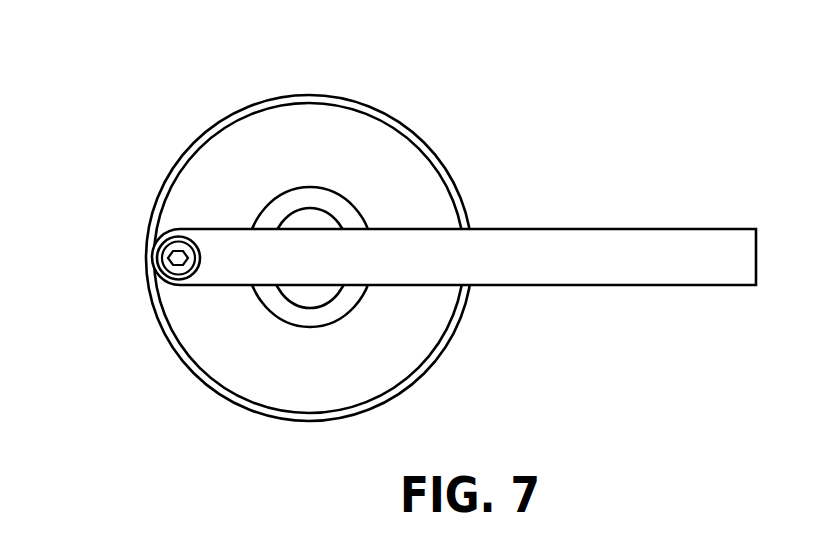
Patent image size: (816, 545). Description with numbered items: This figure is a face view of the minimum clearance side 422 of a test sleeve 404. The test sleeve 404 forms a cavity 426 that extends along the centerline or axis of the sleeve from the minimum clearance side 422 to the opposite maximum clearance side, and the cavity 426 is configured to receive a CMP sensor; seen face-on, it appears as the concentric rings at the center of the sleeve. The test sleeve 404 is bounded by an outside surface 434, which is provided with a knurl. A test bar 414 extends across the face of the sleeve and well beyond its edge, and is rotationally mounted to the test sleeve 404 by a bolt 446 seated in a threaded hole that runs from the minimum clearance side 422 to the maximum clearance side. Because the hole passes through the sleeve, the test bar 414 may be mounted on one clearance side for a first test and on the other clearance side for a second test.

The test sleeve 404 is at (652, 81).
The test bar 414 is at (642, 285).
The minimum clearance side 422 is at (382, 160).
The cavity 426 is at (297, 295).
The outside surface 434 is at (331, 97).
The bolt 446 is at (170, 259).